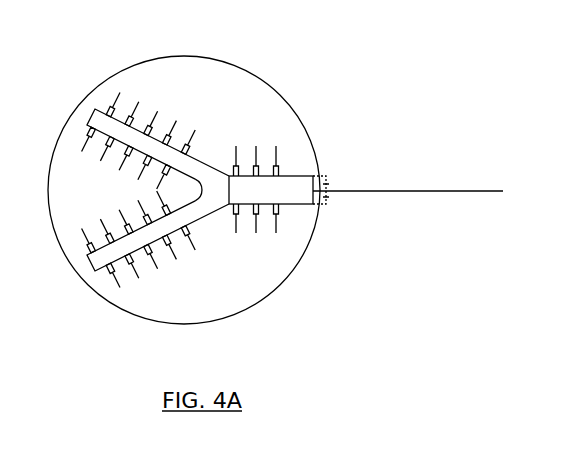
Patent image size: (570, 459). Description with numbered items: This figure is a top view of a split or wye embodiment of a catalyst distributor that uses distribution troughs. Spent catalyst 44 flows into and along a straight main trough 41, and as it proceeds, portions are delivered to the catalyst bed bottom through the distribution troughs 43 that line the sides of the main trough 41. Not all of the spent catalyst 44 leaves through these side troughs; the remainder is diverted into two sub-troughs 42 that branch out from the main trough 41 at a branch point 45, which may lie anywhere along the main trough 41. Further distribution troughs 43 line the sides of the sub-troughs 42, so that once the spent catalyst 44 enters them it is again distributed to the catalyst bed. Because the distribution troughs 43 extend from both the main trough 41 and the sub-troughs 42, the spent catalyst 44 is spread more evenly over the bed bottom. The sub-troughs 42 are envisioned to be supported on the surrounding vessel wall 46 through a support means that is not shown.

The main trough 41 is at (297, 200).
The sub-troughs 42 is at (117, 230).
The distribution troughs 43 is at (148, 125).
The spent catalyst 44 is at (424, 185).
The branch point 45 is at (220, 170).
The vessel wall 46 is at (303, 135).